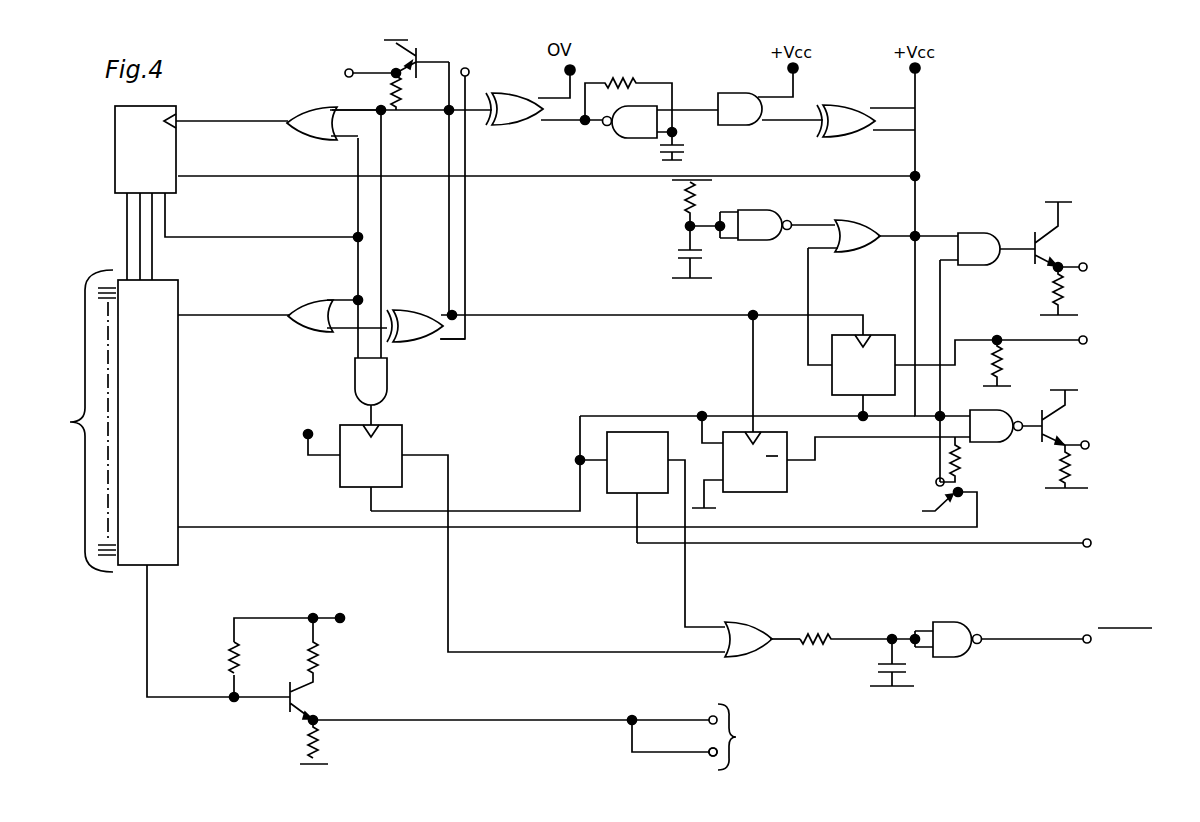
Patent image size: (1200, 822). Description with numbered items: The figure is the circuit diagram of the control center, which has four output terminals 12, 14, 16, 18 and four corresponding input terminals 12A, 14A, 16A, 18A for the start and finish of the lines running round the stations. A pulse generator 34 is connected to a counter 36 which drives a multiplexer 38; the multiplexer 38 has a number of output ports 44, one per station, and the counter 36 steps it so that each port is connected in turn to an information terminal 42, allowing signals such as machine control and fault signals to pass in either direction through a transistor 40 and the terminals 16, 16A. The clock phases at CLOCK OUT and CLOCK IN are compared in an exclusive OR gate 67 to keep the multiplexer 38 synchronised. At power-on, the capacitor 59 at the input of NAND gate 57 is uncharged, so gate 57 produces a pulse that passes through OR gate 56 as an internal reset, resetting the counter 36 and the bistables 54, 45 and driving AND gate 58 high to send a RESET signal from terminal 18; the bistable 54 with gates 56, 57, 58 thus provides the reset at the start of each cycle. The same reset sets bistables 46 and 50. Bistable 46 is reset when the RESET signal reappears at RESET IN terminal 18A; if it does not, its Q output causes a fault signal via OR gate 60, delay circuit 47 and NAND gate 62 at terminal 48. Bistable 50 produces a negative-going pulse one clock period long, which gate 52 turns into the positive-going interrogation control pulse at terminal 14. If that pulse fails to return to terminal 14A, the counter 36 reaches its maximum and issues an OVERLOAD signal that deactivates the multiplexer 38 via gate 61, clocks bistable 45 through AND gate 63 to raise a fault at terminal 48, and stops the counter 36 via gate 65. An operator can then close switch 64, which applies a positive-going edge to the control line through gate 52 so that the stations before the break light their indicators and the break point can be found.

The counter 36 is at (239, 193).
The gate 65 is at (334, 123).
The output terminal 12 is at (345, 75).
The input terminal 12A is at (486, 190).
The pulse generator 34 is at (637, 82).
The NAND gate 57 is at (753, 209).
The capacitor 59 is at (693, 258).
The OR gate 56 is at (853, 230).
The bistable 54 is at (870, 330).
The input terminal 14A is at (1076, 346).
The AND gate 58 is at (987, 357).
The output terminal 18 is at (1090, 258).
The bistable 50 is at (770, 488).
The AND gate 52 is at (991, 426).
The output terminal 14 is at (1106, 439).
The switch 64 is at (588, 482).
The input terminal 18A is at (894, 547).
The bistable 46 is at (617, 488).
The bistable 45 is at (393, 444).
The AND gate 63 is at (371, 391).
The gate 61 is at (305, 326).
The exclusive OR gate 67 is at (418, 334).
The multiplexer 38 is at (148, 422).
The multiplexer output ports 44 is at (76, 421).
The information terminal 42 is at (140, 620).
The transistor 40 is at (372, 688).
The output terminal 16 is at (613, 737).
The input terminal 16A is at (713, 752).
The OR gate 60 is at (762, 639).
The delay circuit 47 is at (870, 636).
The NAND gate 62 is at (999, 639).
The fault terminal 48 is at (1105, 647).